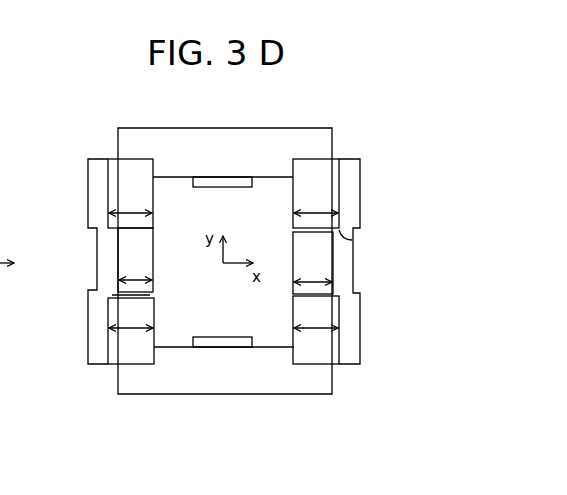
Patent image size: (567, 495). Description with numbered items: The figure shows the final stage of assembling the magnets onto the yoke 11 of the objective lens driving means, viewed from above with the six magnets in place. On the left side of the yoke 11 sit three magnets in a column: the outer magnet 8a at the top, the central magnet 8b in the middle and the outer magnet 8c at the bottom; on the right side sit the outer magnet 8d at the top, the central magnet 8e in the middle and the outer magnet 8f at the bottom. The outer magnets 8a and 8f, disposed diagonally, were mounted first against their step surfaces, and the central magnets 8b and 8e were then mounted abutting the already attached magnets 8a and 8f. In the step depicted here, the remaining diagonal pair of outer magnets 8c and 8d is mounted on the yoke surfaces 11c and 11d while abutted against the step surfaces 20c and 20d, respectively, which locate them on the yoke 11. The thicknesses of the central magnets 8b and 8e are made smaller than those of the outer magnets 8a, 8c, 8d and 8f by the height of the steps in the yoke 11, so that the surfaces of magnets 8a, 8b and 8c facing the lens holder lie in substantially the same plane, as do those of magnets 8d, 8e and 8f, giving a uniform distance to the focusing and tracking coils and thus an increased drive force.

The yoke 11 is at (130, 148).
The outer magnet 8a is at (122, 182).
The central magnet 8b is at (130, 243).
The outer magnet 8c is at (125, 350).
The outer magnet 8d is at (317, 175).
The central magnet 8e is at (313, 252).
The outer magnet 8f is at (318, 347).
The yoke surface 11c is at (105, 328).
The yoke surface 11d is at (340, 200).
The step surface 20c is at (112, 296).
The step surface 20d is at (352, 240).